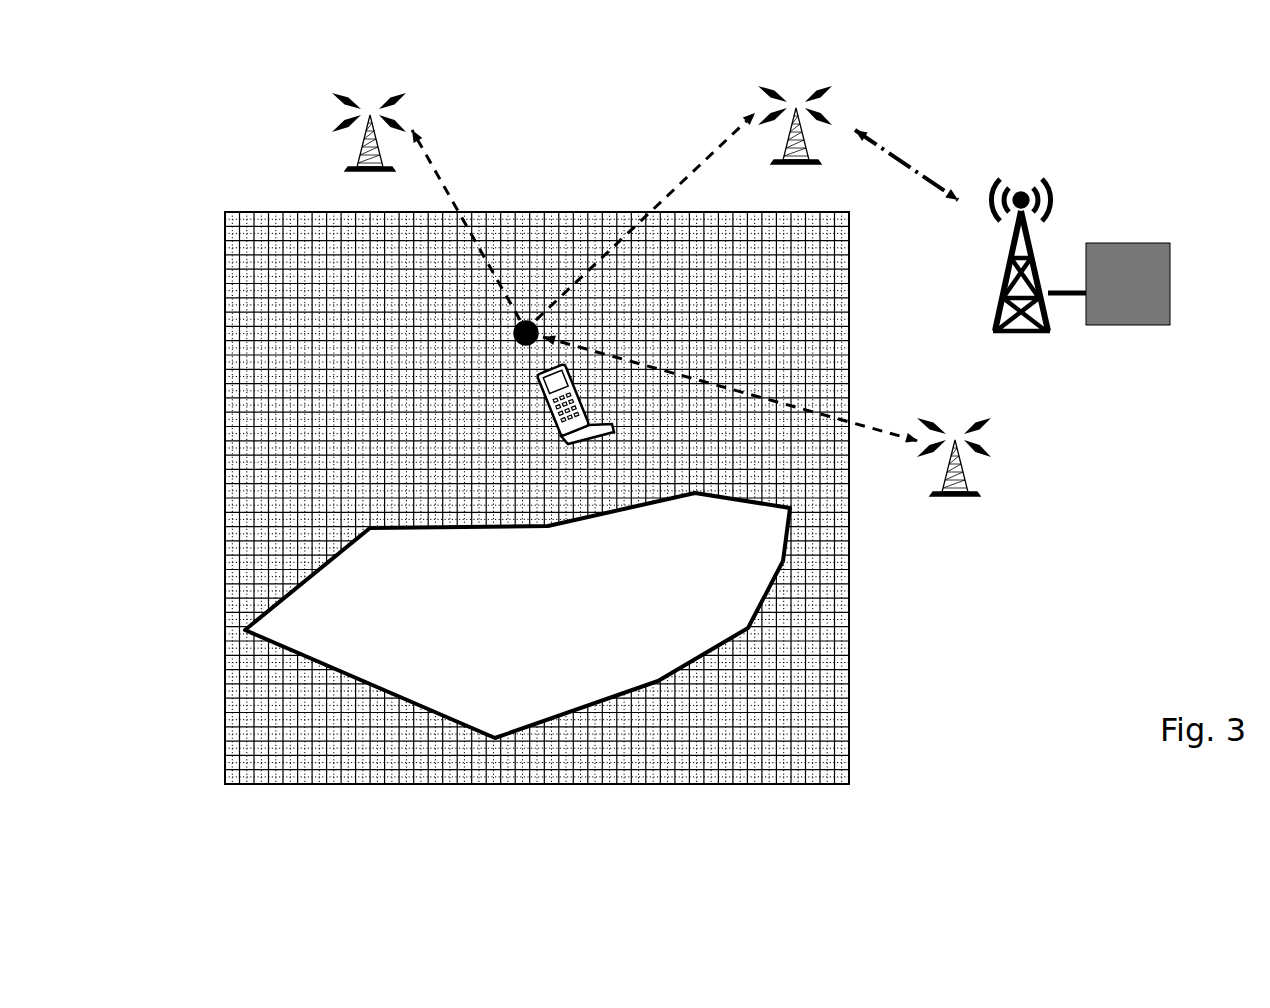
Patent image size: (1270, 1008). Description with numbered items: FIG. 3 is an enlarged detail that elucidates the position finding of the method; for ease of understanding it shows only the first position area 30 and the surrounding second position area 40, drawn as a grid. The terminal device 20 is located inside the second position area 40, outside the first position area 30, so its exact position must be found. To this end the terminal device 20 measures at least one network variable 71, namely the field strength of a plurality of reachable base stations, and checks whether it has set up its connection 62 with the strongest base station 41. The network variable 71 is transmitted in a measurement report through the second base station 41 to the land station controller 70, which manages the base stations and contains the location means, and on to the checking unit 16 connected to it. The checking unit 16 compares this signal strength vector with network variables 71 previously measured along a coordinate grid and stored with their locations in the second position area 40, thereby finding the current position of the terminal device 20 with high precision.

The checking unit 16 is at (1087, 240).
The terminal device 20 is at (590, 430).
The first position area 30 is at (503, 588).
The second position area 40 is at (797, 669).
The second base station 41 is at (800, 93).
The connection 62 is at (428, 157).
The land station controller (BSC) 70 is at (1013, 323).
The network variable 71 is at (505, 331).